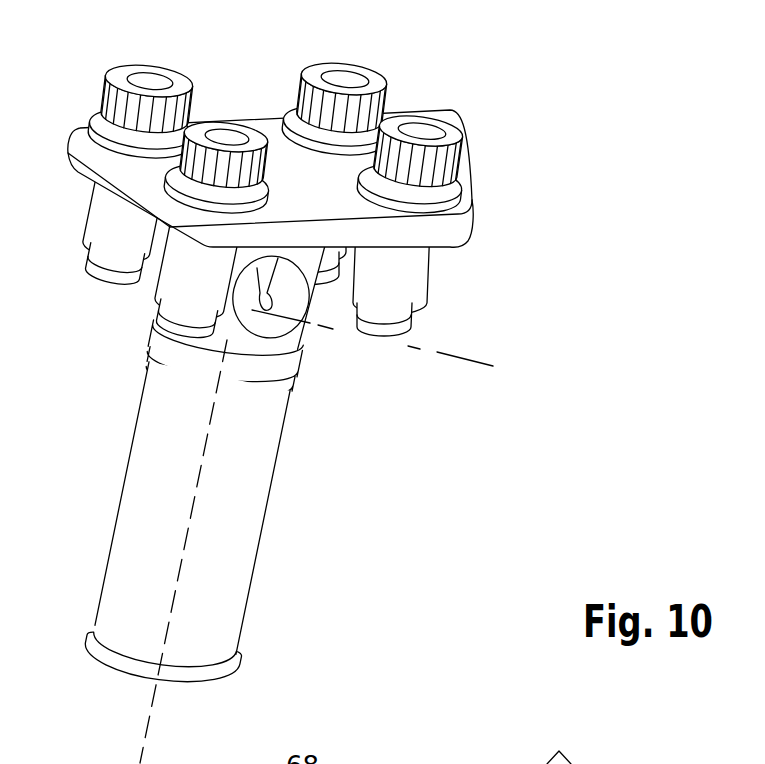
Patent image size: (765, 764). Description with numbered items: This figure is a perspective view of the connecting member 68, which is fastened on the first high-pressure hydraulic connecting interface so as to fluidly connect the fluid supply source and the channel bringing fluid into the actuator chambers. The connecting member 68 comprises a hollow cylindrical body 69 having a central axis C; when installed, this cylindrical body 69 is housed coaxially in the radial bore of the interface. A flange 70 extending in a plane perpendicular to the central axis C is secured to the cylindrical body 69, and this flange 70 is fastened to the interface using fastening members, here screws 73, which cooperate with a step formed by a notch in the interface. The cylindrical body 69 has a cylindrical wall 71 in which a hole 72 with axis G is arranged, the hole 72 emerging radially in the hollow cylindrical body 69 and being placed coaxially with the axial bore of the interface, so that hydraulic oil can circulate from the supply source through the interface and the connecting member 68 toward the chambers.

The connecting member 68 is at (277, 384).
The hollow cylindrical body 69 is at (188, 528).
The flange 70 is at (266, 128).
The cylindrical wall 71 is at (277, 467).
The hole 72 is at (290, 287).
The screws 73 is at (352, 80).
The axis of the hole G is at (438, 352).
The central axis C is at (145, 732).